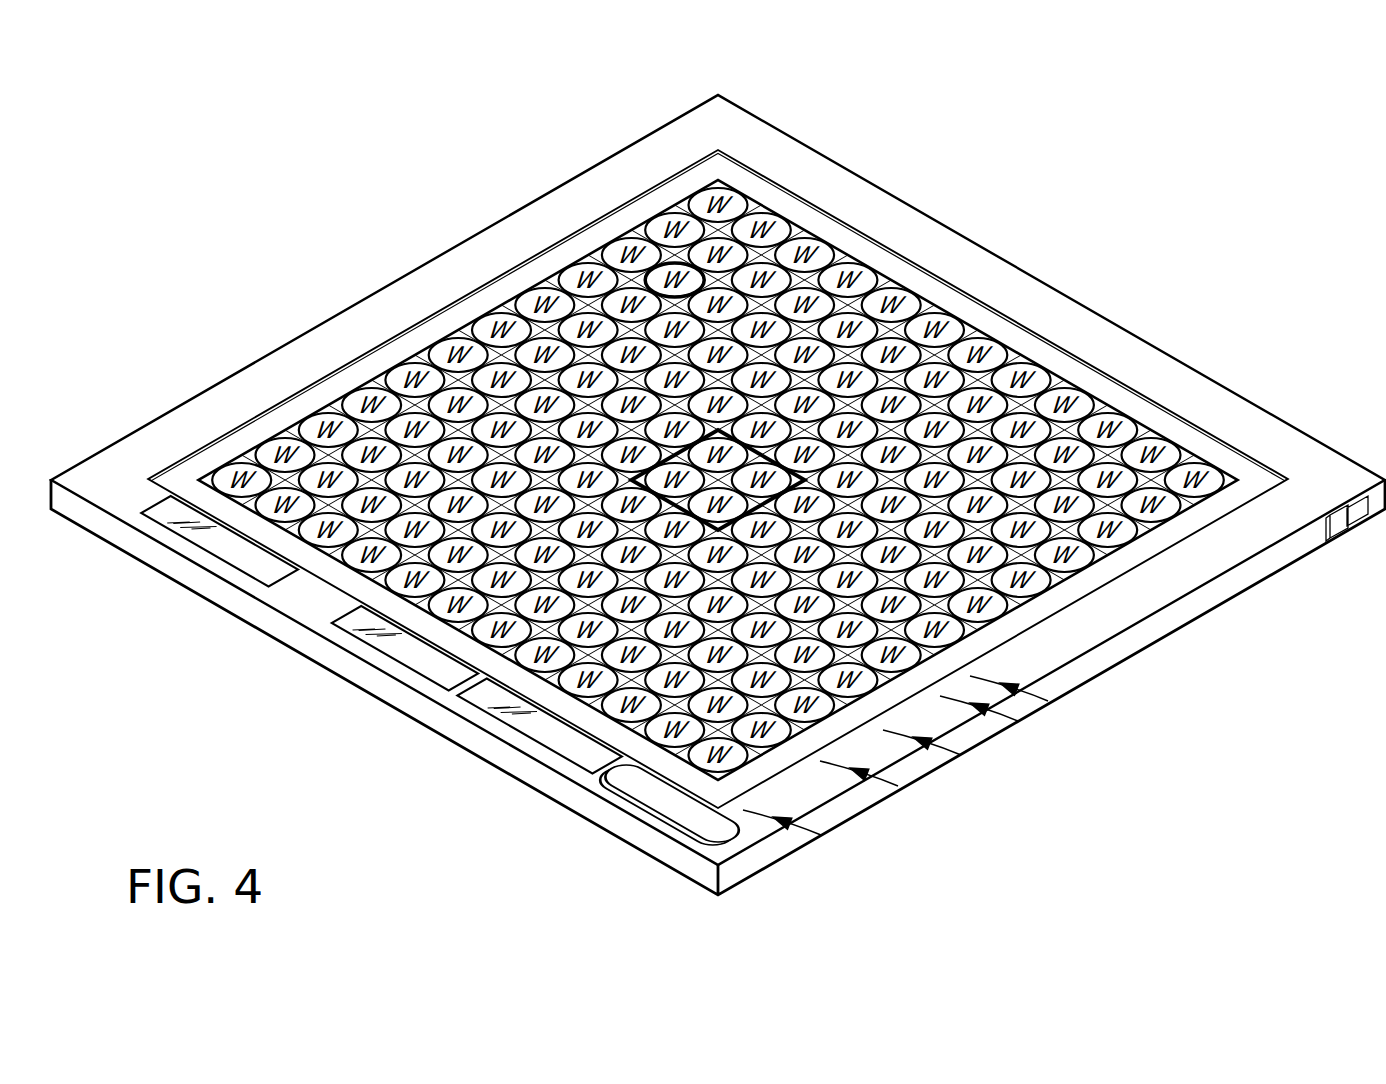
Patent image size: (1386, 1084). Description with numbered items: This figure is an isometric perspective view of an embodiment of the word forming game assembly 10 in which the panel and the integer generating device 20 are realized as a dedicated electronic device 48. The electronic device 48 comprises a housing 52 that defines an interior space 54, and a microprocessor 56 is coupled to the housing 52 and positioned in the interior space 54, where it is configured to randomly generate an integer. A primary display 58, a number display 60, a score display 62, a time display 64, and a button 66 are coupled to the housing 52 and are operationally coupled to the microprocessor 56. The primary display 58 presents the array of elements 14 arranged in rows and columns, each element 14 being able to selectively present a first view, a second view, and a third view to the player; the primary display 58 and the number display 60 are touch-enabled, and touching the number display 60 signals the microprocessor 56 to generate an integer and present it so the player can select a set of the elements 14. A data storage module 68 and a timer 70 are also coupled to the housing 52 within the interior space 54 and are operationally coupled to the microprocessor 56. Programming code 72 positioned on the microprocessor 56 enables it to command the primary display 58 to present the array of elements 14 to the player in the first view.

The word forming game assembly 10 is at (1148, 134).
The elements 14 is at (785, 452).
The integer generating device 20 is at (833, 827).
The electronic device 48 is at (1284, 406).
The housing 52 is at (1088, 294).
The interior space 54 is at (1149, 377).
The microprocessor 56 is at (973, 747).
The primary display 58 is at (1094, 598).
The number display 60 is at (531, 749).
The score display 62 is at (216, 561).
The time display 64 is at (405, 673).
The button 66 is at (669, 843).
The data storage module 68 is at (1060, 693).
The timer 70 is at (1030, 713).
The programming code 72 is at (910, 778).